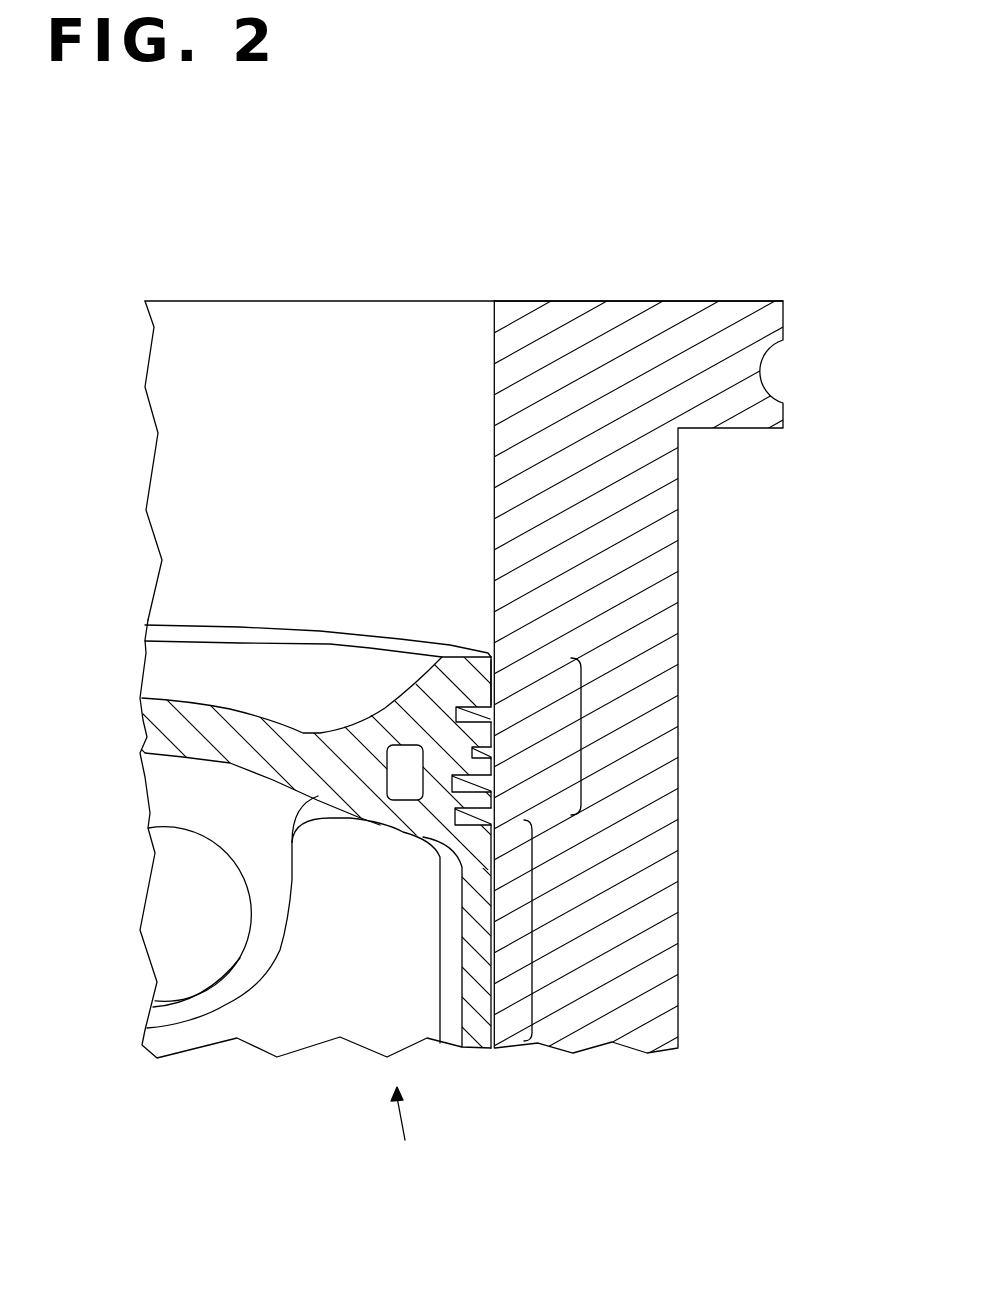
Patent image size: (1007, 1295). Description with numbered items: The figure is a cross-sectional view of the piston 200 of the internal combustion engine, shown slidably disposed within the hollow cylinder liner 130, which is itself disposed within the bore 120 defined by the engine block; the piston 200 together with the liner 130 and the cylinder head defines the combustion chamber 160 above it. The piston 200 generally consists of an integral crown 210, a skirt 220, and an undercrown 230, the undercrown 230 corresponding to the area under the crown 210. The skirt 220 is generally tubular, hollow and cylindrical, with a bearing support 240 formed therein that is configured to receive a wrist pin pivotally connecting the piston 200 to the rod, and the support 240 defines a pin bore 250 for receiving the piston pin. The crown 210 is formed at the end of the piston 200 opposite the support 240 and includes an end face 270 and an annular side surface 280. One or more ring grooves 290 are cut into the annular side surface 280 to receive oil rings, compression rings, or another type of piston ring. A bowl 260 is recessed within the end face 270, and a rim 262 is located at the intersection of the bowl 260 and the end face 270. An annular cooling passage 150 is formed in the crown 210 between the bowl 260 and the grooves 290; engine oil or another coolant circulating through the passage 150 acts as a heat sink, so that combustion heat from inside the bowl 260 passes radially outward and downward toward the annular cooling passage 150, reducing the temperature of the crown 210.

The bore 120 is at (493, 342).
The liner 130 is at (602, 394).
The annular cooling passage 150 is at (397, 760).
The combustion chamber 160 is at (330, 394).
The piston 200 is at (409, 1129).
The crown 210 is at (581, 735).
The skirt 220 is at (532, 888).
The undercrown 230 is at (377, 827).
The bearing support 240 is at (283, 940).
The pin bore 250 is at (212, 943).
The bowl 260 is at (237, 655).
The rim 262 is at (345, 641).
The end face 270 is at (410, 648).
The annular side surface 280 is at (491, 692).
The ring grooves 290 is at (478, 757).